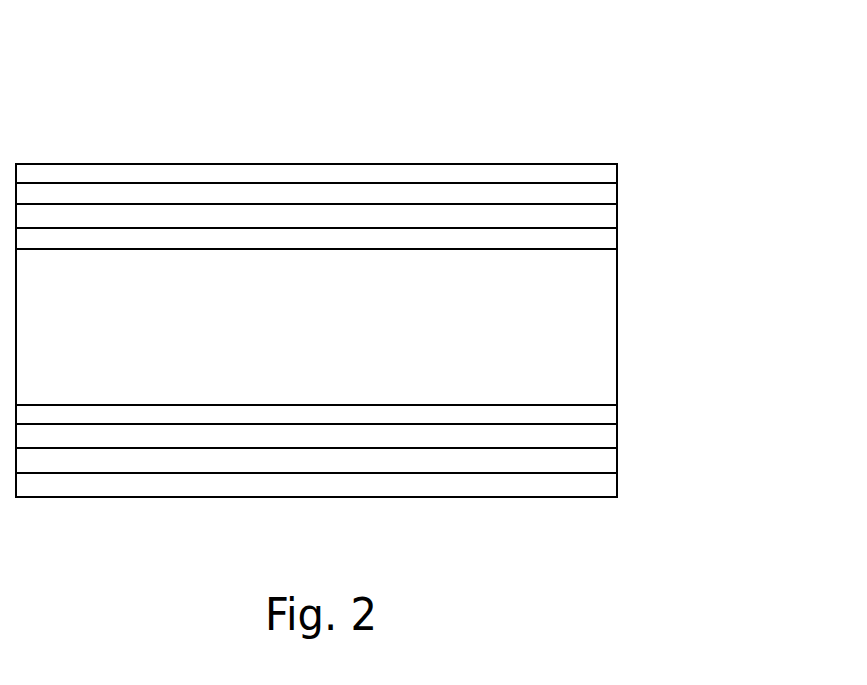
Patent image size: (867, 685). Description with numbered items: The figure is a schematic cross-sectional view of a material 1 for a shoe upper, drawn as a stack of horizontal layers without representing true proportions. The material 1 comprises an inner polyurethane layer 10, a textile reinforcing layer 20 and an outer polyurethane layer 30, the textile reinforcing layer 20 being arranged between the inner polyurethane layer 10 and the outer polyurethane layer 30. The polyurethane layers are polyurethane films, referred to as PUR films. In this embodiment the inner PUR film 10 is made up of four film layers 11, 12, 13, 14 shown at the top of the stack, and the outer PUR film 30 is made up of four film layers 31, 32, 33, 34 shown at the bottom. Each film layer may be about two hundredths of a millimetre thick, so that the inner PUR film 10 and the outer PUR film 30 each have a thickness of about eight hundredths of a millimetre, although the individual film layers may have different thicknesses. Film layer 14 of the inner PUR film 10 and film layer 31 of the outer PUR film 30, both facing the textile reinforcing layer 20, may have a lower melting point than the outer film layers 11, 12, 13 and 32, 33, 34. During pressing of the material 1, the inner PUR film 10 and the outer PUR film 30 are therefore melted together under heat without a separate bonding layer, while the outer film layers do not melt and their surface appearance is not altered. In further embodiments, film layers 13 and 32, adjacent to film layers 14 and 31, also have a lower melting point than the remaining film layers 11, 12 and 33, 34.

The material 1 is at (372, 255).
The inner polyurethane layer 10 is at (372, 207).
The film layer 11 is at (316, 175).
The film layer 12 is at (316, 195).
The film layer 13 is at (316, 217).
The film layer 14 is at (316, 239).
The textile reinforcing layer 20 is at (316, 327).
The outer polyurethane layer 30 is at (372, 451).
The film layer 31 is at (316, 417).
The film layer 32 is at (316, 437).
The film layer 33 is at (316, 461).
The film layer 34 is at (316, 485).